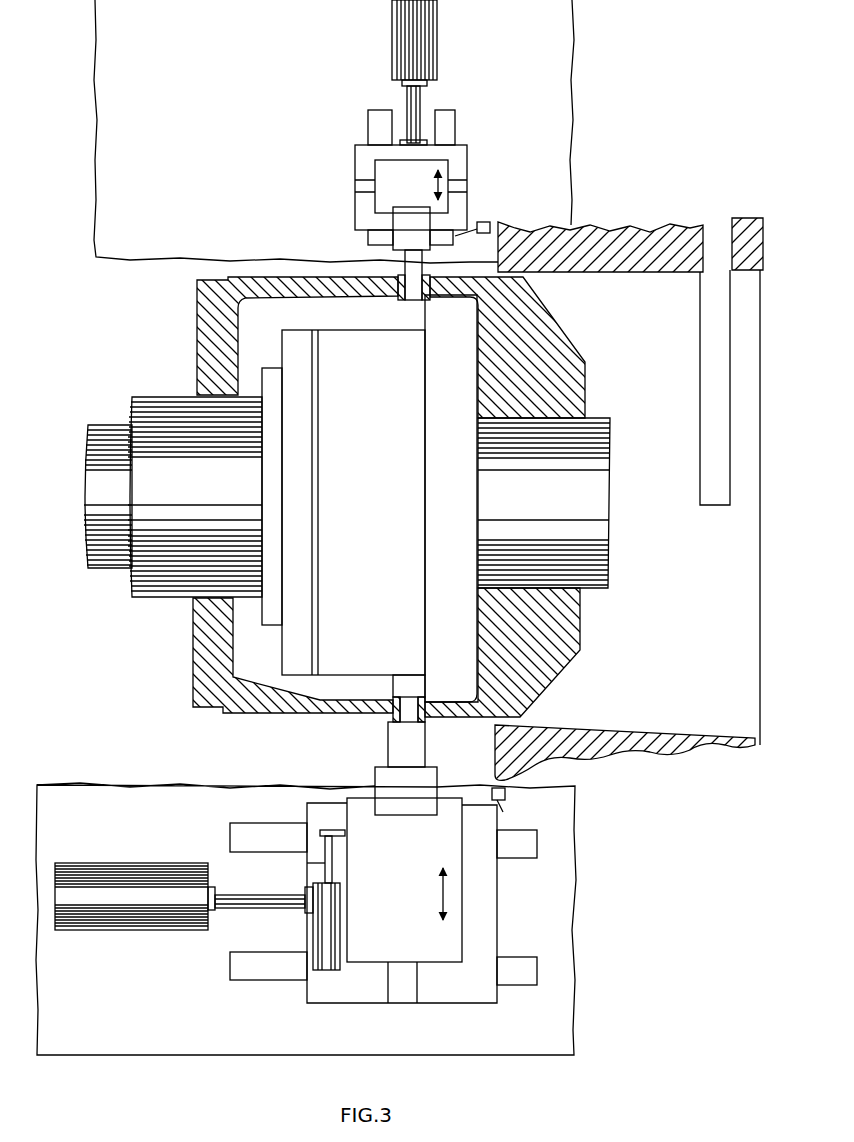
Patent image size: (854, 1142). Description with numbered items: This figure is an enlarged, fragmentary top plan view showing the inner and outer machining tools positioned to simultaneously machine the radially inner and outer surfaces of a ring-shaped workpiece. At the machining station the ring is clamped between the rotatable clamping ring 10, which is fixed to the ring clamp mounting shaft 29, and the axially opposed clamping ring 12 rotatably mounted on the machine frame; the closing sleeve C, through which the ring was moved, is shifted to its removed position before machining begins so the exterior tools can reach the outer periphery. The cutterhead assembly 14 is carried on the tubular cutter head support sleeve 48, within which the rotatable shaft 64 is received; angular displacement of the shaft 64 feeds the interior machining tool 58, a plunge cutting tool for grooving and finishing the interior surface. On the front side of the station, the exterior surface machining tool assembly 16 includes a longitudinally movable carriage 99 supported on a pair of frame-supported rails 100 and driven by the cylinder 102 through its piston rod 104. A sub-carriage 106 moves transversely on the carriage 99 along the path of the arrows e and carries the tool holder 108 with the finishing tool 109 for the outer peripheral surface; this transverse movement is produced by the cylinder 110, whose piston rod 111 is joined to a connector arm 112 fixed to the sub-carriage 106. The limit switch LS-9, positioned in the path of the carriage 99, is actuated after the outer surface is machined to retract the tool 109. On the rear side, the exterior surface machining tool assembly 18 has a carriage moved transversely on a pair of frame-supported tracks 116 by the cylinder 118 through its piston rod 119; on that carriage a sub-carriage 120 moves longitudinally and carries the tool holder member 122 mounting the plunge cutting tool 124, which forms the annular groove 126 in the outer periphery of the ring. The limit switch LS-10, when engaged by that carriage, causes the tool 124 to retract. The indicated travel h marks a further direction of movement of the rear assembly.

The rotatable clamping ring 10 is at (543, 312).
The clamping ring 12 is at (213, 307).
The cutterhead assembly 14 is at (300, 690).
The exterior surface machining tool assembly 16 is at (273, 1072).
The exterior surface machining tool assembly 18 is at (328, 134).
The ring clamp mounting shaft 29 is at (608, 575).
The tubular cutter head support sleeve 48 is at (162, 398).
The machining tool 58 is at (412, 695).
The rotatable shaft 64 is at (112, 560).
The carriage 99 is at (498, 932).
The rails 100 is at (537, 855).
The cylinder 102 is at (140, 925).
The piston rod 104 is at (262, 908).
The sub-carriage 106 is at (372, 945).
The tool holder 108 is at (384, 778).
The machining tool 109 is at (417, 755).
The cylinder 110 is at (313, 962).
The piston rod 111 is at (305, 863).
The connector arm 112 is at (345, 833).
The tracks 116 is at (372, 118).
The cylinder 118 is at (432, 48).
The piston rod 119 is at (415, 103).
The sub-carriage 120 is at (383, 200).
The tool holder member 122 is at (403, 236).
The tool member 124 is at (413, 270).
The annular groove 126 is at (405, 296).
The closing sleeve C is at (656, 234).
The limit switch LS-10 is at (490, 224).
The limit switch LS-9 is at (505, 793).
The vertical travel h is at (460, 188).
The arrows e is at (441, 893).